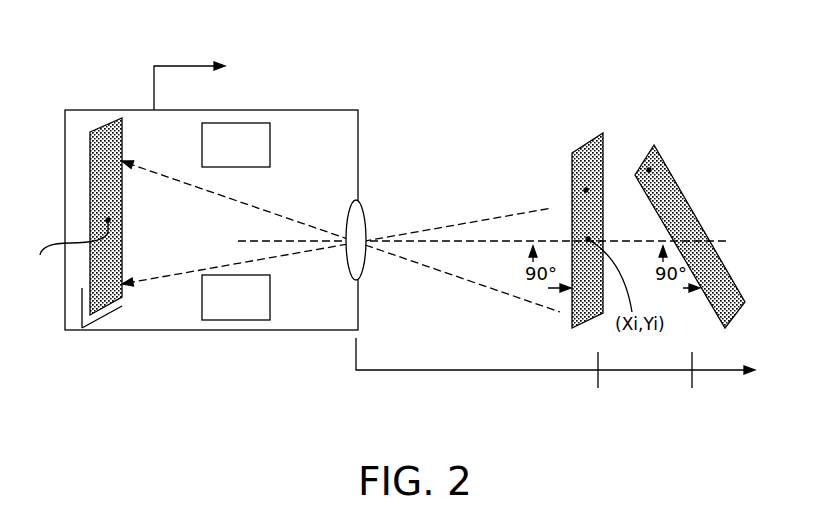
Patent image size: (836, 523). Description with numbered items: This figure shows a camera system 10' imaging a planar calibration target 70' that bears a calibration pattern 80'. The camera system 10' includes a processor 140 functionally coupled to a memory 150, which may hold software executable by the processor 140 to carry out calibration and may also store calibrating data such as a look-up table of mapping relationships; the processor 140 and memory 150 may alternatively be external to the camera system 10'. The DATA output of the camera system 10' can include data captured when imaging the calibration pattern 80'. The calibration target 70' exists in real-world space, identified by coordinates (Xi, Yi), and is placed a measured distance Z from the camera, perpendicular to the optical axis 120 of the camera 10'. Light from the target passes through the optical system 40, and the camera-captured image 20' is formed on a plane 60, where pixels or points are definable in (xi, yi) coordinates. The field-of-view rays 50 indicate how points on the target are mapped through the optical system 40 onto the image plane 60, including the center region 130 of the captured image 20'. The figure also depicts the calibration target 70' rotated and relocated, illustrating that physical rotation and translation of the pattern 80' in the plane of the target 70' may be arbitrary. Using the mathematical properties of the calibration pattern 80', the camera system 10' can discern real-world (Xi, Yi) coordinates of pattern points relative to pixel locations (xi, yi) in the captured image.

The camera system 10' is at (423, 226).
The camera-captured image 20' is at (93, 249).
The optical system 40 is at (365, 207).
The field of view rays 50 is at (450, 218).
The image plane 60 is at (118, 131).
The planar calibration target 70' is at (637, 219).
The calibration pattern 80' is at (570, 141).
The optical axis 120 is at (262, 240).
The center region 130 is at (113, 213).
The processor 140 is at (276, 149).
The memory 150 is at (276, 301).